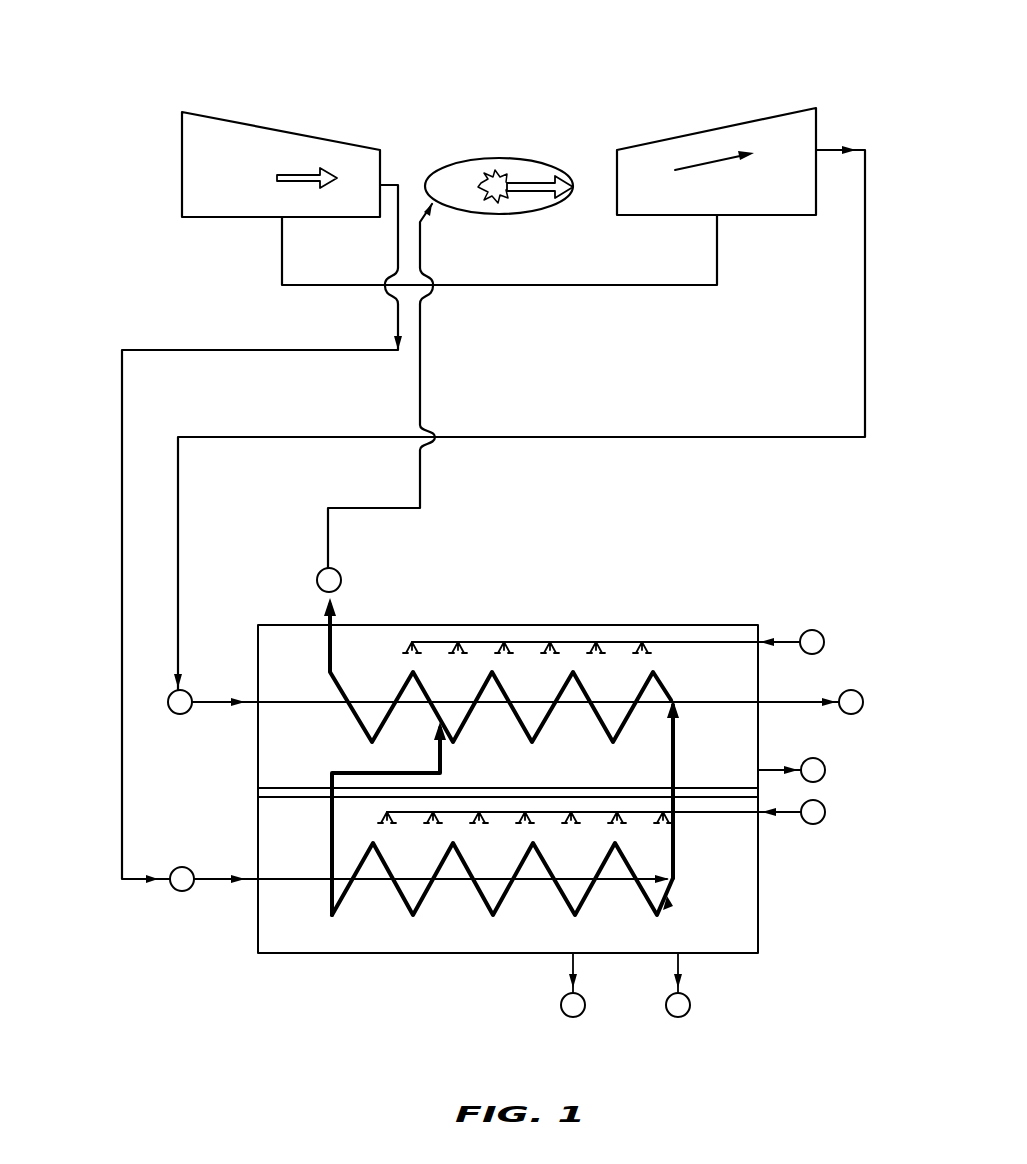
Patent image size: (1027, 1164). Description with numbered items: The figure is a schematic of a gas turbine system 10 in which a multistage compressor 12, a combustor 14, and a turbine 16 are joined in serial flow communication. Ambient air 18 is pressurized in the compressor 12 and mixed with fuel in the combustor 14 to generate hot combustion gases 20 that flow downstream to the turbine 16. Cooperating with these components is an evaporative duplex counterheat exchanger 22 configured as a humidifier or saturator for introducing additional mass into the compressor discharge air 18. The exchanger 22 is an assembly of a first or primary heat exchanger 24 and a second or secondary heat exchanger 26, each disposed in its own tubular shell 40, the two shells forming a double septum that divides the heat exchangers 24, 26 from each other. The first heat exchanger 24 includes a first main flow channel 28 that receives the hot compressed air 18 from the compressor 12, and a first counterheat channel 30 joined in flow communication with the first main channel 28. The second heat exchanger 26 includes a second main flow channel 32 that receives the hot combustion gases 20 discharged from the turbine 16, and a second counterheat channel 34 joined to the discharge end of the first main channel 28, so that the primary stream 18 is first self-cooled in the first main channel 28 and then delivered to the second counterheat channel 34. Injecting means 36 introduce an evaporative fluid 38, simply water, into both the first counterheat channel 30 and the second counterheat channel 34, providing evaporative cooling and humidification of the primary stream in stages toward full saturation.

The gas turbine system 10 is at (765, 70).
The multistage compressor 12 is at (228, 120).
The combustor 14 is at (507, 158).
The turbine 16 is at (675, 135).
The compressed air 18 is at (298, 173).
The hot combustion gases 20 is at (530, 192).
The evaporative duplex counterheat exchanger 22 is at (622, 604).
The first heat exchanger 24 is at (252, 846).
The second heat exchanger 26 is at (250, 744).
The first main flow channel 28 is at (367, 880).
The first counterheat channel 30 is at (402, 903).
The second main flow channel 32 is at (372, 702).
The second counterheat channel 34 is at (342, 682).
The injecting means 36 is at (808, 630).
The evaporative fluid 38 is at (643, 645).
The tubular shell 40 is at (695, 787).